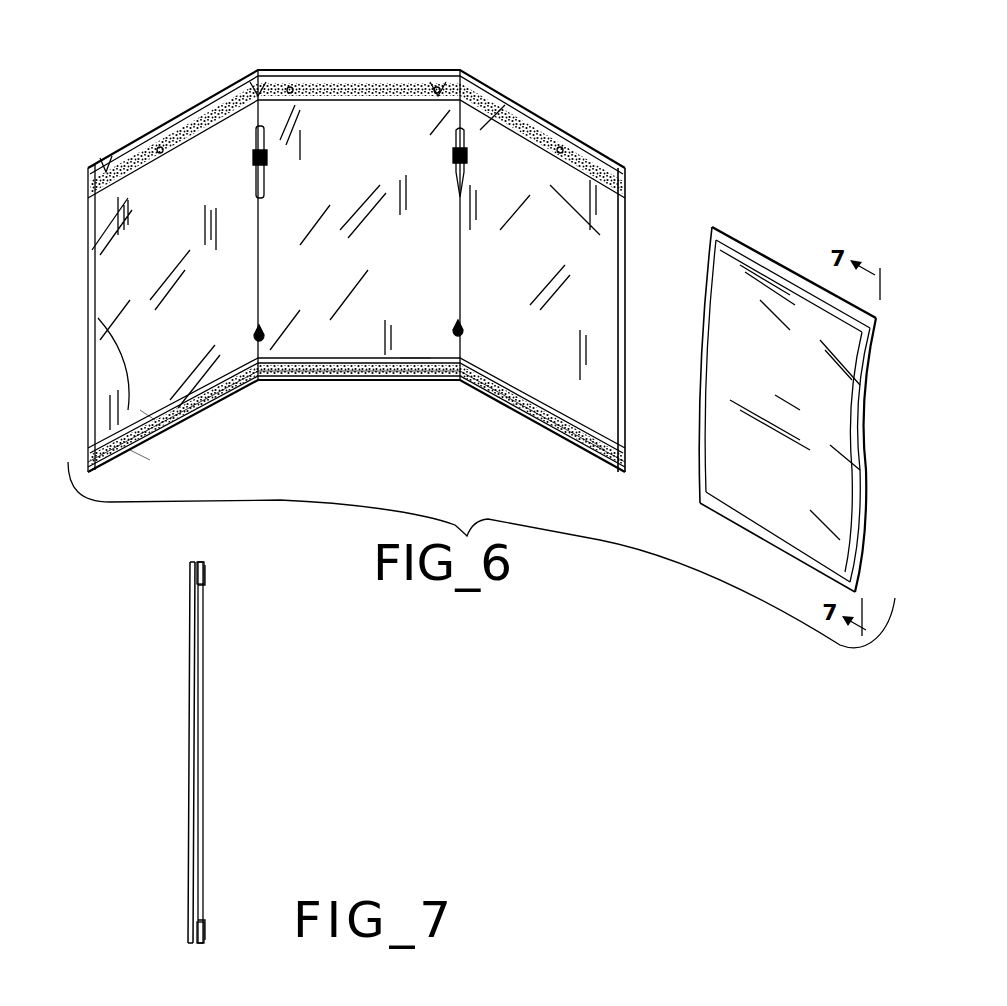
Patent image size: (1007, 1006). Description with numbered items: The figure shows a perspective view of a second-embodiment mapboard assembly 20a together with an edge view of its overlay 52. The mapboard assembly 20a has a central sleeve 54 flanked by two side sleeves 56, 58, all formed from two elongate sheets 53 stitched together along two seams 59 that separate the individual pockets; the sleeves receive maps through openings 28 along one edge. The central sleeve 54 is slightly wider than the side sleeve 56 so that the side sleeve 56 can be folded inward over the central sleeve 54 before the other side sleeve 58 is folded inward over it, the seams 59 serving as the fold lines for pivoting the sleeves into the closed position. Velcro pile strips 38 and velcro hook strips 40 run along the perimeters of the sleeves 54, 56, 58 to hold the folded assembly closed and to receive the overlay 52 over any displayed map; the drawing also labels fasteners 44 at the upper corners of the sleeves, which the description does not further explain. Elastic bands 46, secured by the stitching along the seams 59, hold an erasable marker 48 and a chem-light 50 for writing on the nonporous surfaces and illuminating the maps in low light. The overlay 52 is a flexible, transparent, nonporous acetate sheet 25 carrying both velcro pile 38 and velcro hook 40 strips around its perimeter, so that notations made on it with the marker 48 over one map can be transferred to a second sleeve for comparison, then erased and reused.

In FIG. 6, the mapboard assembly 20a is at (392, 58).
In FIG. 6, the acetate sheet 25 is at (803, 413).
In FIG. 7, the acetate sheet 25 is at (193, 695).
In FIG. 6, the openings 28 is at (503, 402).
In FIG. 6, the velcro pile strip 38 is at (315, 88).
In FIG. 7, the velcro pile strip 38 is at (207, 575).
In FIG. 6, the velcro hook strip 40 is at (168, 118).
In FIG. 7, the velcro hook strip 40 is at (207, 935).
In FIG. 6, the hinge post 44 is at (255, 92).
In FIG. 6, the elastic bands 46 is at (253, 160).
In FIG. 6, the erasable marker 48 is at (455, 133).
In FIG. 6, the chem-light 50 is at (265, 146).
In FIG. 6, the overlay 52 is at (817, 250).
In FIG. 6, the elongate sheets 53 is at (140, 456).
In FIG. 6, the central sleeve 54 is at (416, 362).
In FIG. 6, the side sleeve 56 is at (596, 443).
In FIG. 6, the side sleeve 58 is at (148, 417).
In FIG. 6, the seams 59 is at (262, 250).